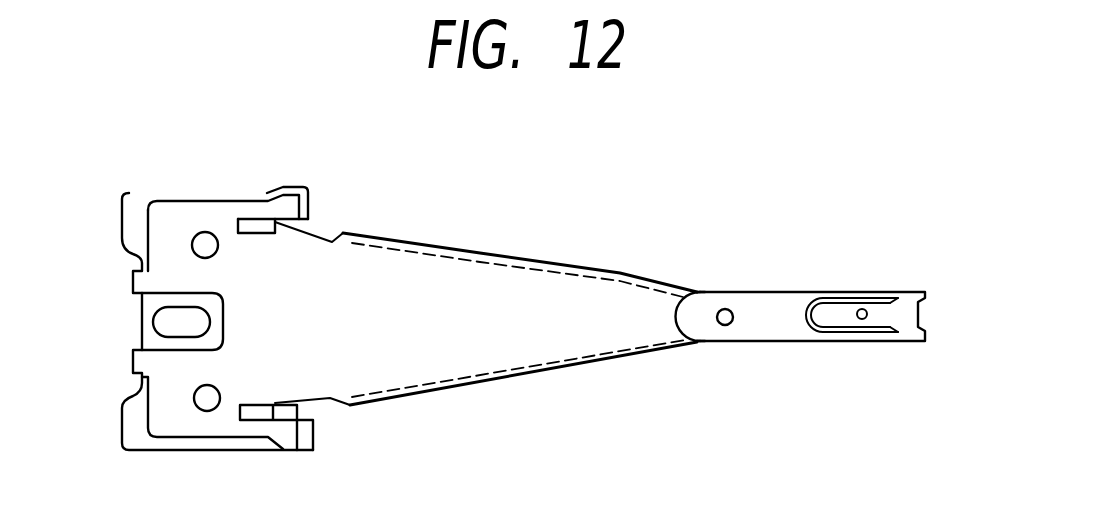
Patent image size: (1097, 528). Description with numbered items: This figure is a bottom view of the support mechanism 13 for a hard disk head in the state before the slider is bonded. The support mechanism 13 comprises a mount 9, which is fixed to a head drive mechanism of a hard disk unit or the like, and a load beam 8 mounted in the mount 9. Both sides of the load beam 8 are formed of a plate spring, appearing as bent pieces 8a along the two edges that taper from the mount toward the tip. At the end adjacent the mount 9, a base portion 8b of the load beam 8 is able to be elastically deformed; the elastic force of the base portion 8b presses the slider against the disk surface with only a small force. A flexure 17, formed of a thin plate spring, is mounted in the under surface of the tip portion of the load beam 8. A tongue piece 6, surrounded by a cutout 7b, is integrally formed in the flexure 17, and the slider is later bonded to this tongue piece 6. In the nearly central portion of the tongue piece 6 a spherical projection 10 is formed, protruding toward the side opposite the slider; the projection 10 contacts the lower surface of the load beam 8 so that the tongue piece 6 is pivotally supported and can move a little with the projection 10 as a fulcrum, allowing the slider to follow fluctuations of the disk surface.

The mount 9 is at (135, 213).
The load beam 8 is at (575, 295).
The bent pieces 8a is at (412, 240).
The base portion 8b is at (302, 370).
The support mechanism 13 is at (486, 320).
The flexure 17 is at (760, 362).
The tongue piece 6 is at (881, 308).
The cutout 7b is at (844, 334).
The projection 10 is at (861, 309).